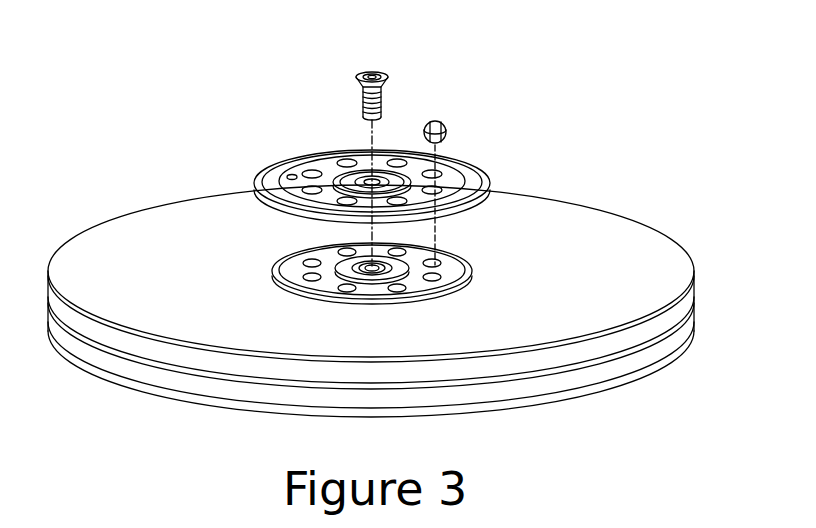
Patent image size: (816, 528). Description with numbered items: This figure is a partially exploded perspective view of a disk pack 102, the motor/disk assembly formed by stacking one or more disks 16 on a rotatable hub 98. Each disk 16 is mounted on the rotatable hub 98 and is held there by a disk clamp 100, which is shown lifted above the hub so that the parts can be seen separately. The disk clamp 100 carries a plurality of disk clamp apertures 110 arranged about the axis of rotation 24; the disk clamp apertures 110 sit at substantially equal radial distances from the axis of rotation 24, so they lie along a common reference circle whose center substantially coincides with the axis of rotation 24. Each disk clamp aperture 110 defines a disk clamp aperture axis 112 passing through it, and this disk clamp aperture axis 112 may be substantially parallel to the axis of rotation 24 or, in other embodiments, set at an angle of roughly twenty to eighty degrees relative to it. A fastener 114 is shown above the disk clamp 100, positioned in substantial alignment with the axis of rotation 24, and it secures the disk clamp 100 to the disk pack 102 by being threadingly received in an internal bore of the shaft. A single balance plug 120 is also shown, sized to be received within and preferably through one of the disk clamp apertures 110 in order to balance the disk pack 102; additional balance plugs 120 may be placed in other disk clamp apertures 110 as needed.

The disk 16 is at (161, 288).
The axis of rotation 24 is at (373, 132).
The rotatable hub 98 is at (278, 262).
The disk clamp 100 is at (268, 168).
The disk pack 102 is at (634, 197).
The disk clamp apertures 110 is at (320, 168).
The disk clamp aperture axis 112 is at (437, 228).
The fastener 114 is at (389, 72).
The balance plug 120 is at (447, 126).